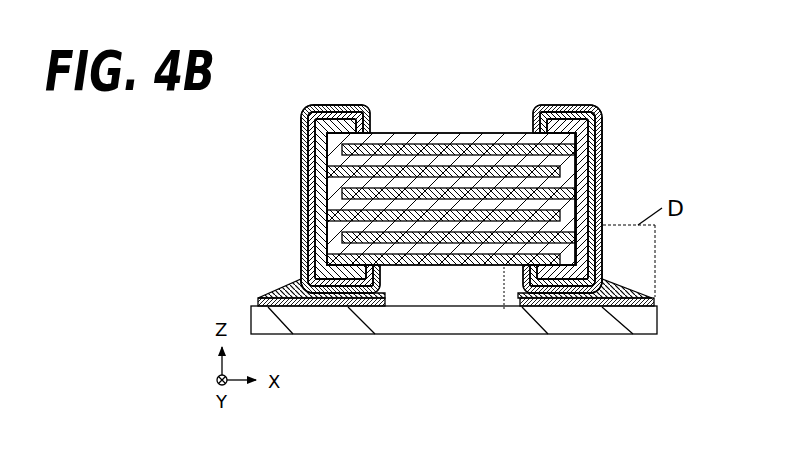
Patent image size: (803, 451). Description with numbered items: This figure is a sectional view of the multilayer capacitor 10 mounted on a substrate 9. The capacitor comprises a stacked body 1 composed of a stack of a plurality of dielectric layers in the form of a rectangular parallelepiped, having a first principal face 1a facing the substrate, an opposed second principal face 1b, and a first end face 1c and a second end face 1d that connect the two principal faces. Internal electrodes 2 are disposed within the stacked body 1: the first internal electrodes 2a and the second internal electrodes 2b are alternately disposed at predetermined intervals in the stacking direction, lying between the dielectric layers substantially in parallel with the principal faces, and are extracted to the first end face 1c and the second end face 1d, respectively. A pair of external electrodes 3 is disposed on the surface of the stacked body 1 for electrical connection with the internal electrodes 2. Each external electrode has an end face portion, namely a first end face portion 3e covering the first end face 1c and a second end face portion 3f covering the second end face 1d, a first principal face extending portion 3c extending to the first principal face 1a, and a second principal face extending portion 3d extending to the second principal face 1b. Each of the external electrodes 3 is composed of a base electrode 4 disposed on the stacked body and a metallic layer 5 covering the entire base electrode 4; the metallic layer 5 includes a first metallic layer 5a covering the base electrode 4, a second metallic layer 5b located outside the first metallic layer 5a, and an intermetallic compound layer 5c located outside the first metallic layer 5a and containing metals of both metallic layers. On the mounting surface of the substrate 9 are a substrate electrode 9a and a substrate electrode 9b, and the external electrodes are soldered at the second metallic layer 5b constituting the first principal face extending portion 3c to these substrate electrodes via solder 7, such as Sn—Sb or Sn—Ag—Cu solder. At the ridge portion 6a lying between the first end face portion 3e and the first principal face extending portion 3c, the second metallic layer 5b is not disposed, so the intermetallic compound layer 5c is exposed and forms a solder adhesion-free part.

The multilayer capacitor 10 is at (466, 87).
The stacked body 1 is at (446, 132).
The first principal face 1a is at (413, 266).
The second principal face 1b is at (427, 132).
The first end face 1c is at (312, 229).
The second end face 1d is at (602, 153).
The internal electrodes 2 is at (248, 98).
The first internal electrode 2a is at (305, 116).
The second internal electrode 2b is at (305, 132).
The external electrodes 3 is at (577, 31).
The first principal face extending portion 3c is at (563, 307).
The second principal face extending portion 3d is at (340, 105).
The first end face portion 3e is at (297, 202).
The second end face portion 3f is at (602, 181).
The base electrode 4 is at (600, 112).
The metallic layer 5 is at (535, 66).
The first metallic layer 5a is at (585, 106).
The second metallic layer 5b is at (566, 106).
The intermetallic compound layer 5c is at (540, 106).
The ridge portion 6a is at (292, 292).
The solder 7 is at (397, 308).
The substrate 9 is at (347, 309).
The substrate electrode 9a is at (297, 310).
The substrate electrode 9b is at (547, 308).